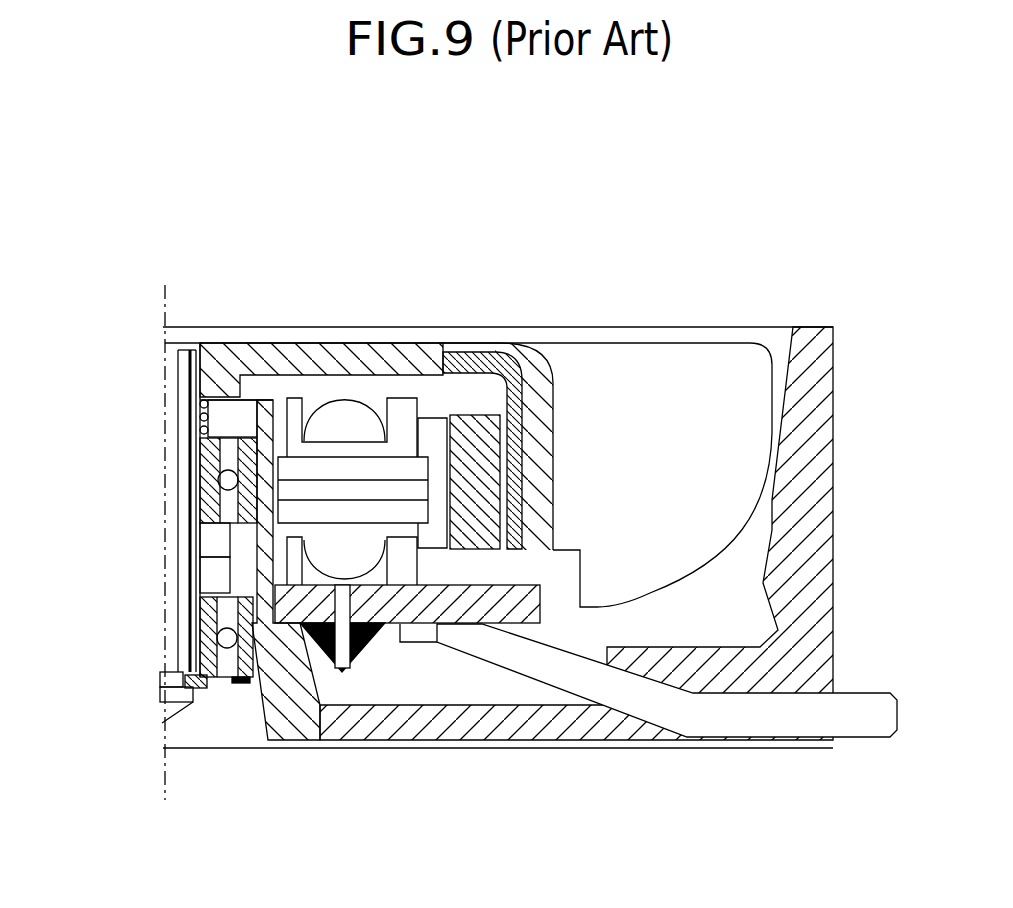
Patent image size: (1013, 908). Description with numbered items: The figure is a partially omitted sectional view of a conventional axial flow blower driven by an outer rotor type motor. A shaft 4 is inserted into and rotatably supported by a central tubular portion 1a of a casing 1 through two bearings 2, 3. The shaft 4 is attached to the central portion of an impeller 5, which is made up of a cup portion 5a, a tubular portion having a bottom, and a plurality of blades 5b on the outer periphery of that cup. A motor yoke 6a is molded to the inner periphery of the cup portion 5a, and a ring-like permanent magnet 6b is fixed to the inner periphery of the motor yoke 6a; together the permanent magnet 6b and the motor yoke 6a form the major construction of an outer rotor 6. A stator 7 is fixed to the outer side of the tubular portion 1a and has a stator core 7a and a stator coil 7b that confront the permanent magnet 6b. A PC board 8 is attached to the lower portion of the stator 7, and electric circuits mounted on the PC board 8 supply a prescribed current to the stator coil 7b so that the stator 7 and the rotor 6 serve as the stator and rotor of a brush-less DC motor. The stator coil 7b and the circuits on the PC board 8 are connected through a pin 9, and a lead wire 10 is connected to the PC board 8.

The casing 1 is at (811, 322).
The central tubular portion 1a is at (257, 565).
The bearing 2 is at (228, 678).
The bearing 3 is at (228, 447).
The shaft 4 is at (187, 420).
The impeller 5 is at (540, 342).
The cup portion 5a is at (560, 427).
The blades 5b is at (687, 390).
The rotor 6 is at (580, 215).
The motor yoke 6a is at (480, 364).
The permanent magnet 6b is at (483, 410).
The stator 7 is at (341, 386).
The stator core 7a is at (418, 596).
The stator coil 7b is at (360, 563).
The PC board 8 is at (400, 512).
The pin 9 is at (343, 662).
The lead wire 10 is at (507, 662).